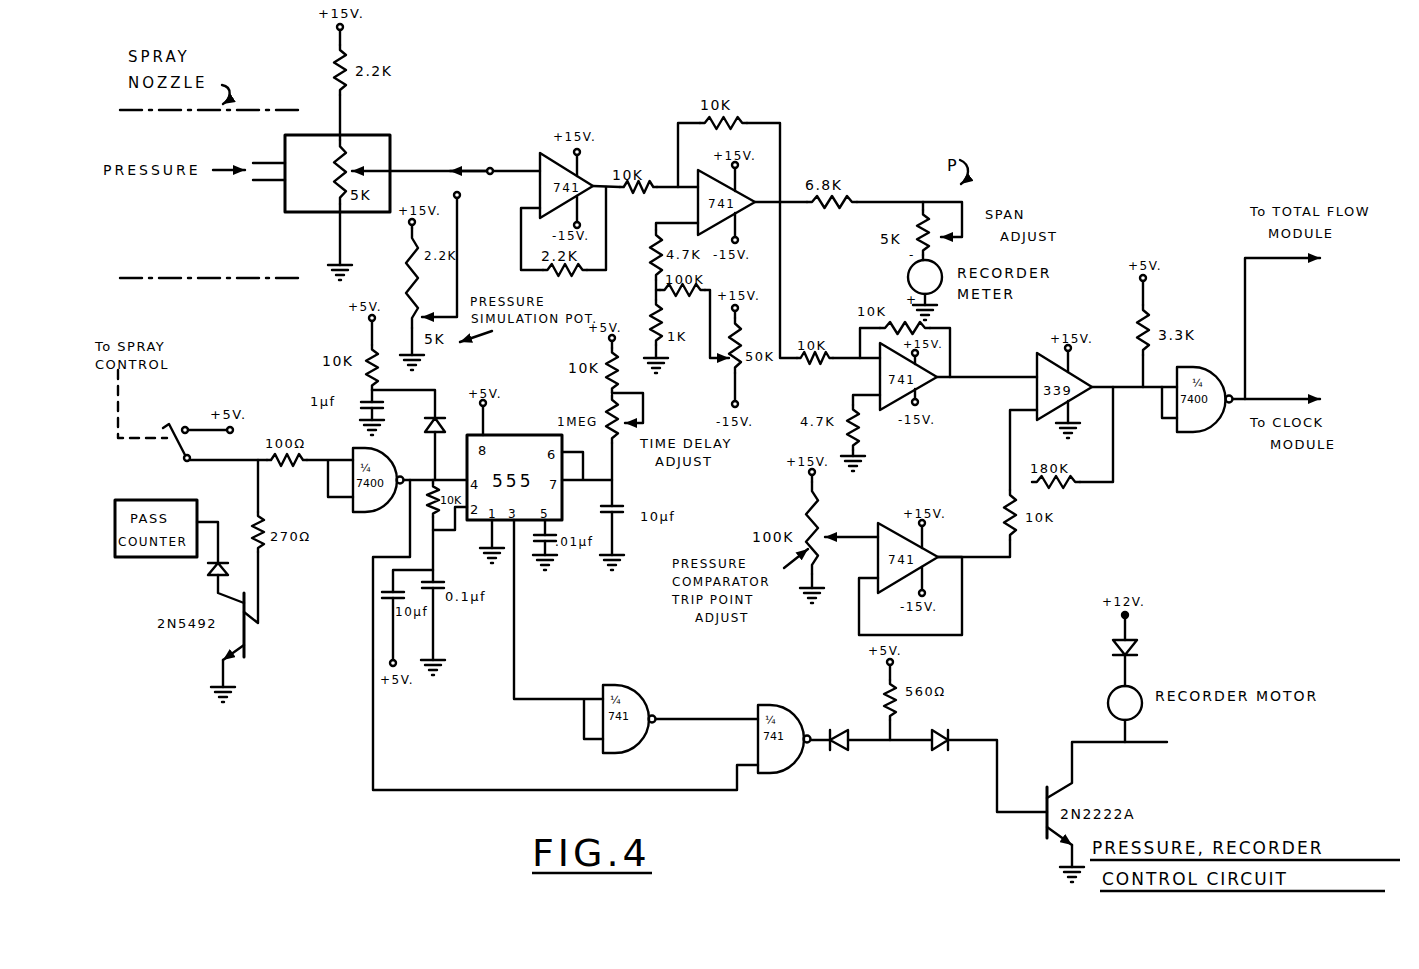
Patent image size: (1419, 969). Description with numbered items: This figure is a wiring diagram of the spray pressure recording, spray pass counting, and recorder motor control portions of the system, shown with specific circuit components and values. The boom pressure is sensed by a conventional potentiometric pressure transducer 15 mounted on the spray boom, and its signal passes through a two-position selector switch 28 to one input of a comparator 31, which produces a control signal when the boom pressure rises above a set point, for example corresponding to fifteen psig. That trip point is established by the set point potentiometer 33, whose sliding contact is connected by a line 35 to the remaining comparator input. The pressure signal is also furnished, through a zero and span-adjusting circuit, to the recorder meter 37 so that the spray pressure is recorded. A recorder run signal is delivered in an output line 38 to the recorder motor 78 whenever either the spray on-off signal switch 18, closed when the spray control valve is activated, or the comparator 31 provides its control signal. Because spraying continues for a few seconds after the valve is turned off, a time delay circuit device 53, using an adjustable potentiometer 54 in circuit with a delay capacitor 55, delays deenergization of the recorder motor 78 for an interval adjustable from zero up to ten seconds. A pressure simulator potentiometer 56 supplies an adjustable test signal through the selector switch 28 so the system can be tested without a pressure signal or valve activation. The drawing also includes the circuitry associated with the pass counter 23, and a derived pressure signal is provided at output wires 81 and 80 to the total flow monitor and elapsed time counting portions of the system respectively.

The pressure transducer 15 is at (360, 135).
The spray on-off signal switch 18 is at (173, 420).
The pass counter 23 is at (136, 558).
The selector switch 28 is at (468, 174).
The comparator 31 is at (1037, 352).
The set point potentiometer 33 is at (819, 522).
The line 35 is at (837, 540).
The recorder meter 37 is at (907, 276).
The output line 38 is at (1090, 748).
The time delay circuit device 53 is at (667, 412).
The adjustable potentiometer 54 is at (612, 401).
The delay capacitor 55 is at (617, 506).
The pressure simulator potentiometer 56 is at (414, 306).
The recorder motor 78 is at (1108, 693).
The output wire 80 is at (1282, 398).
The output wire 81 is at (1272, 258).